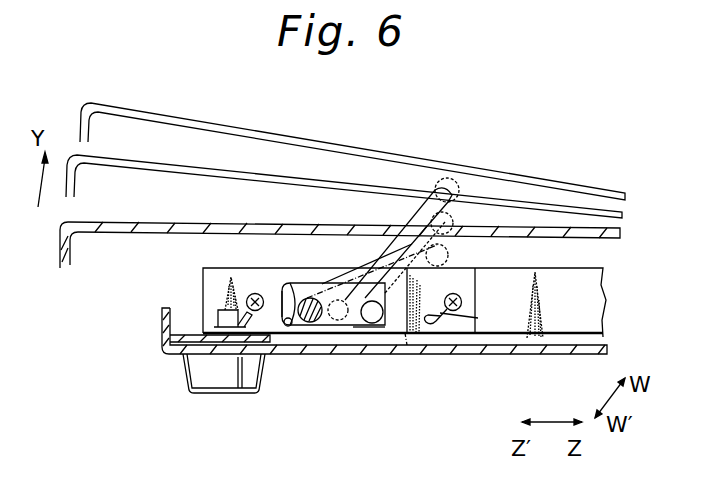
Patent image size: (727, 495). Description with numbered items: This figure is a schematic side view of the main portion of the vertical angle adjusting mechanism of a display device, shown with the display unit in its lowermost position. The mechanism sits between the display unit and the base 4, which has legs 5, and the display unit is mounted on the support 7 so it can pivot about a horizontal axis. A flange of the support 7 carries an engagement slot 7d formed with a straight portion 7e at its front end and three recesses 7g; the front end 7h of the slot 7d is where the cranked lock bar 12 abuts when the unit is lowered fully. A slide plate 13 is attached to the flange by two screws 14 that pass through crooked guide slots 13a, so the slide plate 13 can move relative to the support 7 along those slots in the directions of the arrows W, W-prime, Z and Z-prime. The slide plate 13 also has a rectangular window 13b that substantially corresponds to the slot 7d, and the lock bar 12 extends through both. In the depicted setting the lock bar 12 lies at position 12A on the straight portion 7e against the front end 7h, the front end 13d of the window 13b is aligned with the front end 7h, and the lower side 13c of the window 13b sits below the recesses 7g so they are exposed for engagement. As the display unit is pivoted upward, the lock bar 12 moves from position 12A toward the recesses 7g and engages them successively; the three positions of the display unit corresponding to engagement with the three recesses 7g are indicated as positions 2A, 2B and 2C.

The display unit position 2A is at (110, 222).
The display unit position 2B is at (210, 182).
The display unit position 2C is at (178, 112).
The base 4 is at (162, 342).
The leg 5 is at (186, 385).
The support 7 is at (606, 297).
The engagement slot 7d is at (406, 343).
The straight portion 7e is at (288, 291).
The recess 7g is at (354, 328).
The front end of slot 7h is at (281, 300).
The lock bar 12 is at (322, 324).
The lock bar position 12A is at (296, 282).
The slide plate 13 is at (478, 318).
The guide slot 13a is at (241, 322).
The rectangular window 13b is at (323, 284).
The lower side of window 13c is at (290, 326).
The front end of window 13d is at (230, 318).
The screw 14 is at (247, 300).